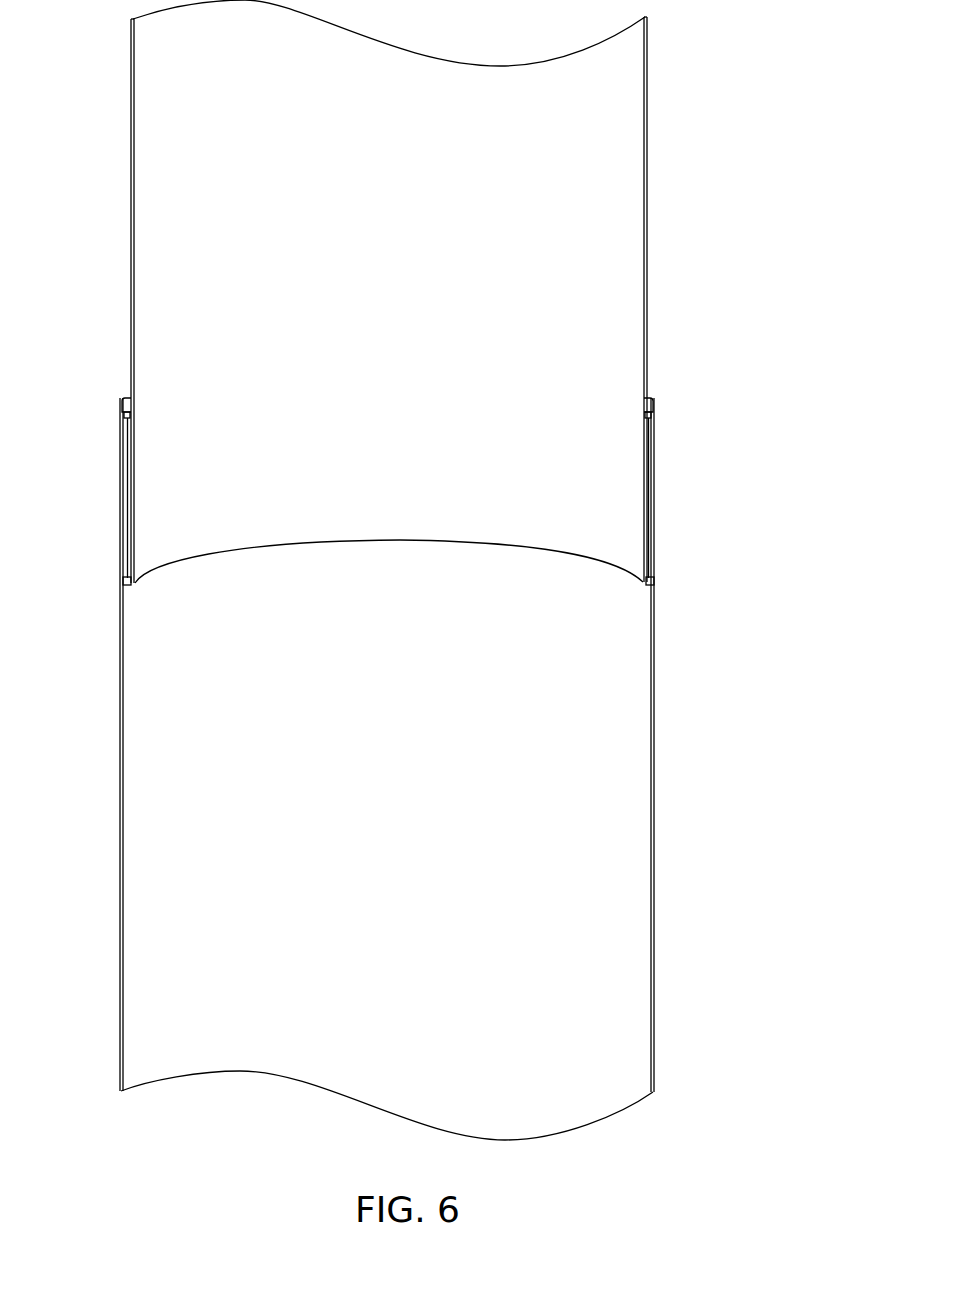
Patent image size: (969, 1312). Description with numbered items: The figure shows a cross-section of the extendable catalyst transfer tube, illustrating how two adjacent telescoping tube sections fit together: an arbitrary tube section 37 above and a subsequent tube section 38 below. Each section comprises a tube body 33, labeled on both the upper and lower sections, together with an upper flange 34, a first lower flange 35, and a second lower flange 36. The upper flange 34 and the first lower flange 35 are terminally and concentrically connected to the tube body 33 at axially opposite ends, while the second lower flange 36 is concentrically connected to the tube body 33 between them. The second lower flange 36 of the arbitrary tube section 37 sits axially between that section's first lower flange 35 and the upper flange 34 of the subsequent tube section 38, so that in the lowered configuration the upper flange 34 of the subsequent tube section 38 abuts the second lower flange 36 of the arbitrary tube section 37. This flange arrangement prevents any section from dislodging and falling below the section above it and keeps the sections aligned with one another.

The tube body 33 is at (404, 322).
The upper flange 34 is at (128, 400).
The first lower flange 35 is at (124, 583).
The second lower flange 36 is at (126, 418).
The arbitrary tube section 37 is at (692, 134).
The subsequent tube section 38 is at (727, 786).